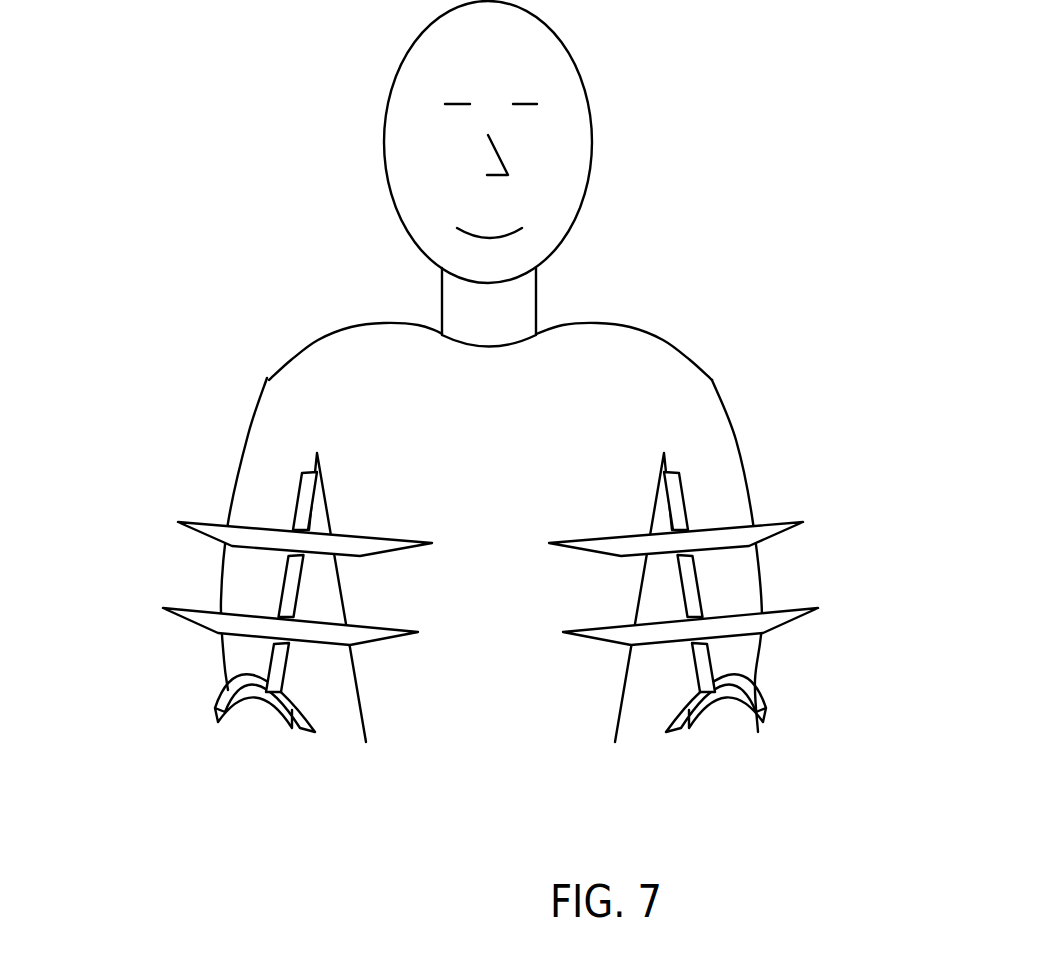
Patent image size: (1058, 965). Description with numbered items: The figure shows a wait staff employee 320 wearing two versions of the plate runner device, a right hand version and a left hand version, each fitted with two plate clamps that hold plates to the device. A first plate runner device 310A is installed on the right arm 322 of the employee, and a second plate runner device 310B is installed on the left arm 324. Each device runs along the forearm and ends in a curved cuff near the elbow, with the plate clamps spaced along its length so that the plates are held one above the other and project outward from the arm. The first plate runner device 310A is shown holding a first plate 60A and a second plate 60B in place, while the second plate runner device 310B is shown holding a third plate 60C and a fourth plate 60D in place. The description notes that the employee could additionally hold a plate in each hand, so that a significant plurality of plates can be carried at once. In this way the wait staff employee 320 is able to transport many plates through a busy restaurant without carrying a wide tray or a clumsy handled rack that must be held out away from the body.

The wait staff employee 320 is at (633, 307).
The right arm 322 is at (260, 470).
The left arm 324 is at (716, 473).
The first plate runner device 310A is at (275, 585).
The second plate runner device 310B is at (708, 585).
The first plate 60A is at (176, 518).
The second plate 60B is at (177, 633).
The third plate 60C is at (815, 512).
The fourth plate 60D is at (820, 620).